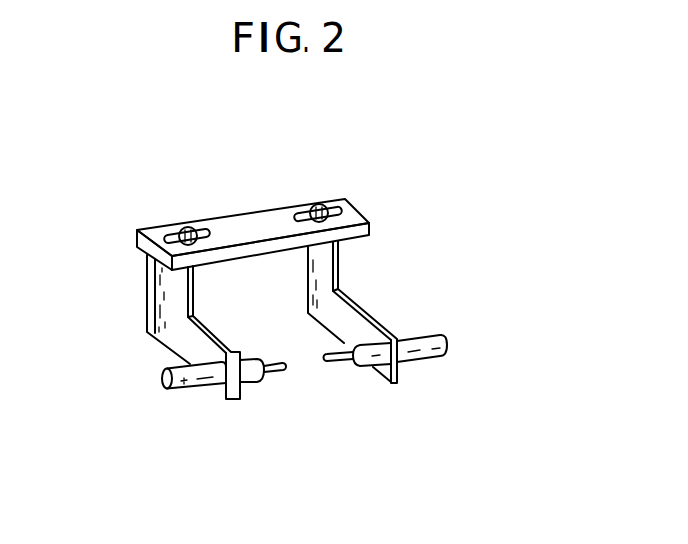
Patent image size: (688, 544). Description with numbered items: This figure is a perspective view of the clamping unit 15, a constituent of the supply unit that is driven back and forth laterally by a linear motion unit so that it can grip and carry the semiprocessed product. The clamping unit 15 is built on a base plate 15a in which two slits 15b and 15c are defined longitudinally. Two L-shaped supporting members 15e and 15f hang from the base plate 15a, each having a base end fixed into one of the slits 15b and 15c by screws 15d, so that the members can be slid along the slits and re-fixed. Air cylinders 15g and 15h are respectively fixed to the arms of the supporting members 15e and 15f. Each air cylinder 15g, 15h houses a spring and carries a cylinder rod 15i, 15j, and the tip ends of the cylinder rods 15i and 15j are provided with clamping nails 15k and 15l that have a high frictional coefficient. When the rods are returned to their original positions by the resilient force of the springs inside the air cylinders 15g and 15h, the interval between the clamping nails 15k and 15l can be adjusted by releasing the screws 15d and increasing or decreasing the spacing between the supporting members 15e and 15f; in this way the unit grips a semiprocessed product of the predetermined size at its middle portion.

The clamping unit 15 is at (141, 282).
The base plate 15a is at (364, 212).
The slit 15b is at (333, 208).
The slit 15c is at (203, 230).
The screw 15d is at (187, 228).
The L-shaped supporting member 15e is at (368, 313).
The L-shaped supporting member 15f is at (168, 332).
The air cylinder 15g is at (433, 358).
The air cylinder 15h is at (183, 390).
The cylinder rod 15i is at (346, 367).
The cylinder rod 15j is at (266, 378).
The clamping nail 15k is at (323, 363).
The clamping nail 15l is at (286, 369).